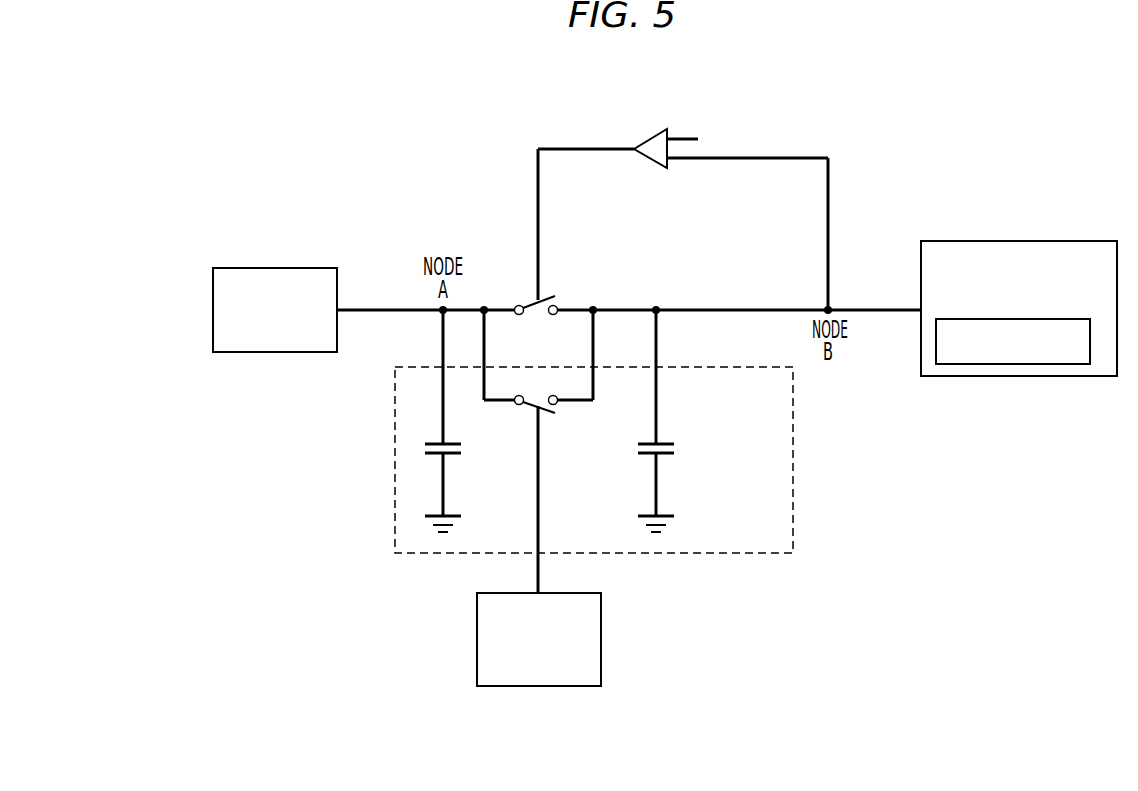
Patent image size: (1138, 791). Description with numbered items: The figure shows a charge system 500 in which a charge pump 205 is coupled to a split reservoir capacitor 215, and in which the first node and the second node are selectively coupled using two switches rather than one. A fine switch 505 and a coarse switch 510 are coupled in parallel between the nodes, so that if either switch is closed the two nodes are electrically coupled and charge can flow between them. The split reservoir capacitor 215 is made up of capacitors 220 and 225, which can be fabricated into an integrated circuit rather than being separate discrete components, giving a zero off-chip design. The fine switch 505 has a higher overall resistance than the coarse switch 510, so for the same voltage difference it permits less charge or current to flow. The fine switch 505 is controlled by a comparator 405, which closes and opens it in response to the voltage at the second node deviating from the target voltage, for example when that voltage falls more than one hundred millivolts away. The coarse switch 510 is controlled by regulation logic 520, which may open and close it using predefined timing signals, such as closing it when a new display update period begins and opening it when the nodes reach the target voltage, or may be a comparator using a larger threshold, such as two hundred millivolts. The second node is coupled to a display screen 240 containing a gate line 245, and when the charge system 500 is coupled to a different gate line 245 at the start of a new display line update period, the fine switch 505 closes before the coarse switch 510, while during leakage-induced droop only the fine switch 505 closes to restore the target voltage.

The charge system 500 is at (1038, 124).
The charge pump 205 is at (331, 348).
The comparator 405 is at (648, 137).
The fine switch 505 is at (558, 304).
The coarse switch 510 is at (556, 412).
The capacitor 220 is at (452, 453).
The capacitor 225 is at (665, 453).
The split reservoir capacitor 215 is at (797, 512).
The display screen 240 is at (1096, 300).
The gate line 245 is at (1084, 356).
The regulation logic 520 is at (598, 680).